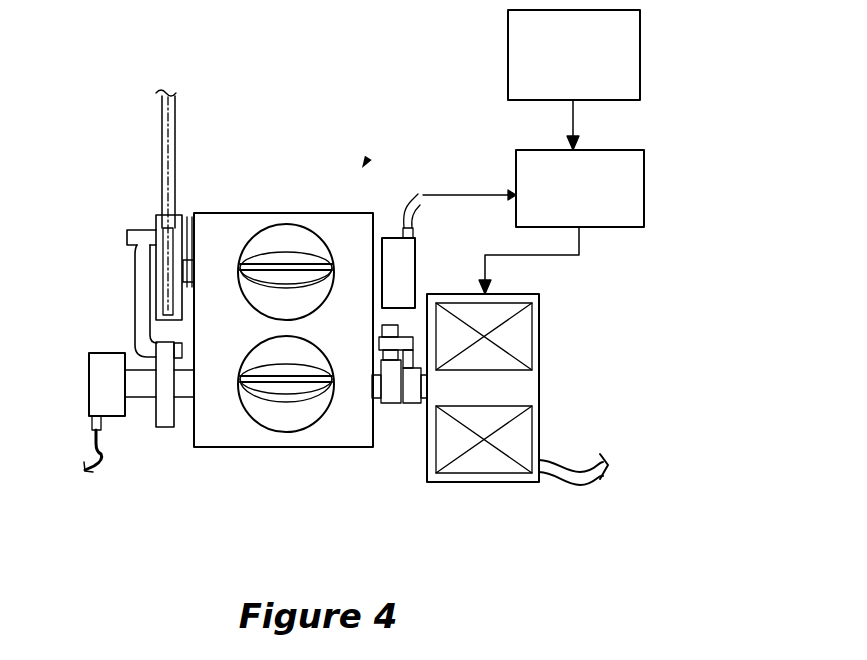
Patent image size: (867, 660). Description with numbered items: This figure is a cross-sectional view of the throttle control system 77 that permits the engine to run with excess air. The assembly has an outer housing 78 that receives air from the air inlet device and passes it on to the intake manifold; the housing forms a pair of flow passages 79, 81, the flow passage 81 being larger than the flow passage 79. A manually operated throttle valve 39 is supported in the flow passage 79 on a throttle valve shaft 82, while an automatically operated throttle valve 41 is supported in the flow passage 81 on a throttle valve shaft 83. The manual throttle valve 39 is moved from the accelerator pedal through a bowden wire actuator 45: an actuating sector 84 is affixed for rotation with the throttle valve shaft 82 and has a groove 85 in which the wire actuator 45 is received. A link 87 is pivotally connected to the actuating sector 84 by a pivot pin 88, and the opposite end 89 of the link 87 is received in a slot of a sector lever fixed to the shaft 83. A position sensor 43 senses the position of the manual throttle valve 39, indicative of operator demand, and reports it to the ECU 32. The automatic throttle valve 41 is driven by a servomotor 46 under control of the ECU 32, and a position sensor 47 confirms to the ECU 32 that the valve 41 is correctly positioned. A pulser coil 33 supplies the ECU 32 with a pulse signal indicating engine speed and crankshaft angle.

The pulser coil 33 is at (642, 57).
The ECU 32 is at (644, 190).
The wire actuator 45 is at (176, 112).
The throttle control system 77 is at (366, 162).
The throttle valve shaft 82 is at (188, 217).
The actuating sector 84 is at (155, 220).
The pivot pin 88 is at (130, 238).
The groove 85 is at (165, 268).
The link 87 is at (133, 330).
The end of link 89 is at (182, 353).
The servomotor 46 is at (97, 383).
The throttle valve shaft 83 is at (142, 390).
The outer housing 78 is at (214, 438).
The flow passage 81 is at (272, 425).
The automatically operated throttle valve 41 is at (307, 388).
The manually operated throttle valve 39 is at (285, 258).
The flow passage 79 is at (303, 232).
The position sensor 43 is at (410, 270).
The position sensor 47 is at (539, 385).